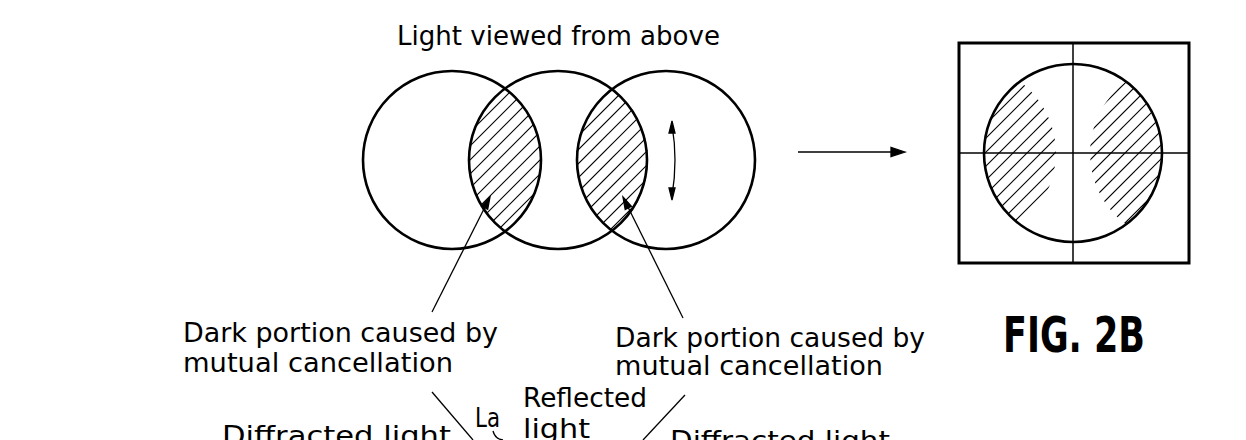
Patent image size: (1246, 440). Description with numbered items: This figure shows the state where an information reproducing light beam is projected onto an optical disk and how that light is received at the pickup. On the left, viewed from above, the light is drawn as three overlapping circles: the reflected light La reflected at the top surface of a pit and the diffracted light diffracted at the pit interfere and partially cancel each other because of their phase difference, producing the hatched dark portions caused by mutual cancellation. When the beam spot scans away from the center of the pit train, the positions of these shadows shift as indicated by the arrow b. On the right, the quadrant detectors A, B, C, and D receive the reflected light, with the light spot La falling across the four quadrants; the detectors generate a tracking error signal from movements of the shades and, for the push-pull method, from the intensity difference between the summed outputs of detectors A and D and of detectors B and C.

The arrow b is at (677, 158).
The reflected light La is at (1048, 67).
The quadrant detector A is at (1154, 56).
The quadrant detector B is at (1180, 231).
The quadrant detector C is at (968, 231).
The quadrant detector D is at (984, 56).